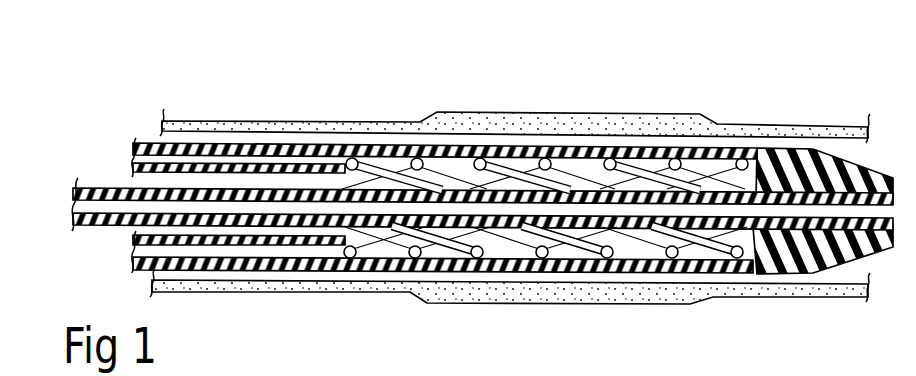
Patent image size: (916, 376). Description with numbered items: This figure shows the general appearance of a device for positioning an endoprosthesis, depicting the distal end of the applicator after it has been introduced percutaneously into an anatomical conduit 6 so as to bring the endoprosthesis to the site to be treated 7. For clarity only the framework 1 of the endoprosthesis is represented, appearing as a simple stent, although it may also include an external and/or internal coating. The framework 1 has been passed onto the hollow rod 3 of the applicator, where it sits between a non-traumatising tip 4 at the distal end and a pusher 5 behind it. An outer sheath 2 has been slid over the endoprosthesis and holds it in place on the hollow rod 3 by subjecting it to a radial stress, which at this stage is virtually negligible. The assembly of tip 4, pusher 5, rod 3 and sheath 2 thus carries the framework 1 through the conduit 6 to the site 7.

The framework 1 is at (525, 157).
The outer sheath 2 is at (390, 146).
The hollow rod 3 is at (727, 152).
The non-traumatising tip 4 is at (880, 172).
The pusher 5 is at (205, 181).
The anatomical conduit 6 is at (784, 127).
The site to be treated 7 is at (594, 113).